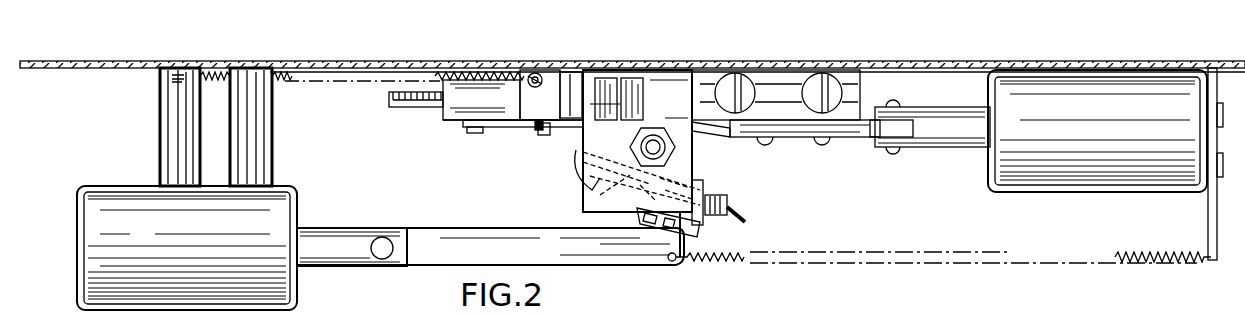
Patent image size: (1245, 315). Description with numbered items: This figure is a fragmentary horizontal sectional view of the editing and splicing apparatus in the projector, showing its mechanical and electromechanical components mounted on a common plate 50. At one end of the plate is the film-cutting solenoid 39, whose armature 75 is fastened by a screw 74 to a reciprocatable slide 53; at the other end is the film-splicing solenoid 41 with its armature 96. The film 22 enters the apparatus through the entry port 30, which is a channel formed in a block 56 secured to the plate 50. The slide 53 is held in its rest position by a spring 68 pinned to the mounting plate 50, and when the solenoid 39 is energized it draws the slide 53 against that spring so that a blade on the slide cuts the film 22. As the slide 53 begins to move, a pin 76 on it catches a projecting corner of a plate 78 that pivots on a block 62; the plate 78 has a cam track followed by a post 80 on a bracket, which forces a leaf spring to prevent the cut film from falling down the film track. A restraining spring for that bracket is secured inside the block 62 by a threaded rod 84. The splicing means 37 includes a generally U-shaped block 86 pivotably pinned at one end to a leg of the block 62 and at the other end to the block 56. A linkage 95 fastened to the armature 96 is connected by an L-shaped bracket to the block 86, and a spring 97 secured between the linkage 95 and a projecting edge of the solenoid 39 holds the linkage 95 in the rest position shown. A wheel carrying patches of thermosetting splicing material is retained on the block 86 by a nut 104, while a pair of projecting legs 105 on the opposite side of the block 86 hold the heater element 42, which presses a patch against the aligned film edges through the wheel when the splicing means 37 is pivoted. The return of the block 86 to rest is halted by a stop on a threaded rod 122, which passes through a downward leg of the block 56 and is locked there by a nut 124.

The film 22 is at (615, 80).
The entry port 30 is at (668, 86).
The splicing means 37 is at (577, 199).
The film-cutting solenoid 39 is at (1125, 92).
The film-splicing solenoid 41 is at (110, 253).
The heater element 42 is at (578, 172).
The plate 50 is at (346, 64).
The reciprocatable slide 53 is at (553, 78).
The block 56 is at (697, 70).
The block 62 is at (455, 105).
The spring 68 is at (288, 72).
The screw 74 is at (893, 156).
The armature 75 is at (948, 138).
The pin 76 is at (540, 75).
The plate 78 is at (483, 128).
The post 80 is at (540, 136).
The threaded rod 84 is at (394, 108).
The U-shaped block 86 is at (698, 230).
The linkage 95 is at (440, 255).
The armature 96 is at (343, 258).
The spring 97 is at (1153, 263).
The nut 104 is at (694, 160).
The projecting legs 105 is at (590, 180).
The threaded rod 122 is at (723, 201).
The nut 124 is at (698, 183).